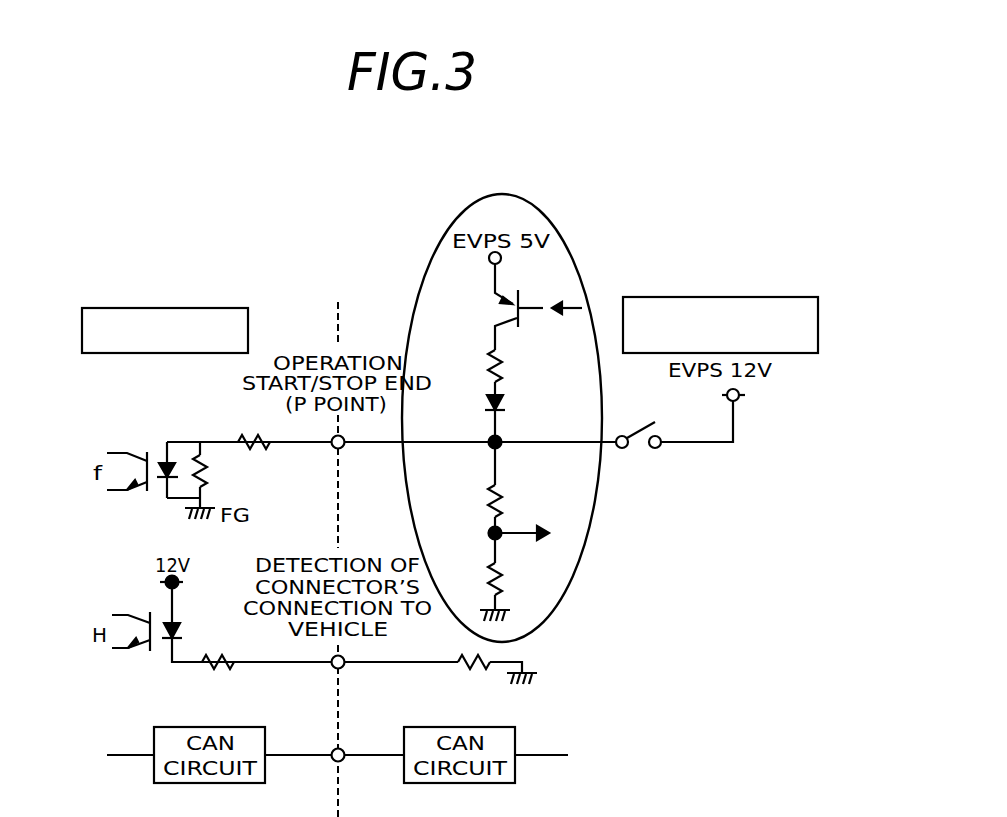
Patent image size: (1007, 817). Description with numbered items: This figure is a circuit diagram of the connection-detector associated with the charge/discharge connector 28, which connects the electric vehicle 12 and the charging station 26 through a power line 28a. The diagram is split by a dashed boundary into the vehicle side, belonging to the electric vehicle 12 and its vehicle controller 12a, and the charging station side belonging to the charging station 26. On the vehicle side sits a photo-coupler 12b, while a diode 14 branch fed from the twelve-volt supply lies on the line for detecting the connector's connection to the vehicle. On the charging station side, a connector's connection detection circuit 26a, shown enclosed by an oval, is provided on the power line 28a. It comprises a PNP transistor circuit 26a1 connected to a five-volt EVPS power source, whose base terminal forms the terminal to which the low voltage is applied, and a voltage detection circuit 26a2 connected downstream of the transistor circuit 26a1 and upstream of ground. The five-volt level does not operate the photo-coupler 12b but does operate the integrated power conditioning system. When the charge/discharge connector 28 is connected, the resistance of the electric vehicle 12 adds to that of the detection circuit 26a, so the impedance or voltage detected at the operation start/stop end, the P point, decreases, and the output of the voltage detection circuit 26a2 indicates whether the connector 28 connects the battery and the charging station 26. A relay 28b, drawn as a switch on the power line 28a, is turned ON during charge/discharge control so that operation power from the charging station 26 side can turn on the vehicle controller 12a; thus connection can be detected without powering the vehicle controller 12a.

The electric vehicle 12 is at (186, 315).
The vehicle controller 12a is at (193, 307).
The photo-coupler 12b is at (120, 453).
The battery 14 is at (175, 588).
The charging station 26 is at (762, 297).
The connector's connection detection circuit 26a is at (543, 215).
The PNP transistor circuit 26a1 is at (508, 323).
The voltage detection circuit 26a2 is at (522, 505).
The charge/discharge connector 28 is at (680, 452).
The power line 28a is at (681, 459).
The relay 28b is at (638, 452).